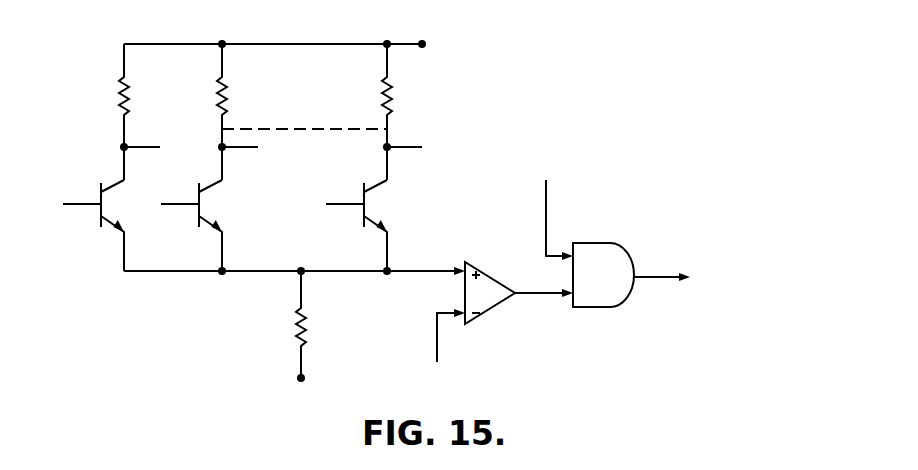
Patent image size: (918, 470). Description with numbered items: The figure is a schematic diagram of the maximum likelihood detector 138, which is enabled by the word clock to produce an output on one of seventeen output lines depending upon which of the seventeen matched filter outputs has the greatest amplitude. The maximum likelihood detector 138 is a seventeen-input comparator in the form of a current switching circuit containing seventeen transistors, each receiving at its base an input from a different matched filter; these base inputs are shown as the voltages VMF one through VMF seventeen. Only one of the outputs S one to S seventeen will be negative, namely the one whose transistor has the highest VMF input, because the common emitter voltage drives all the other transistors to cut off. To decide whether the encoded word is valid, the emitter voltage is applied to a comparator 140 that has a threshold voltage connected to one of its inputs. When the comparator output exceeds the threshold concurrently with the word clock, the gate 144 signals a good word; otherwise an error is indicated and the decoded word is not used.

The maximum likelihood detector 138 is at (294, 35).
The comparator 140 is at (495, 305).
The AND gate 144 is at (612, 307).